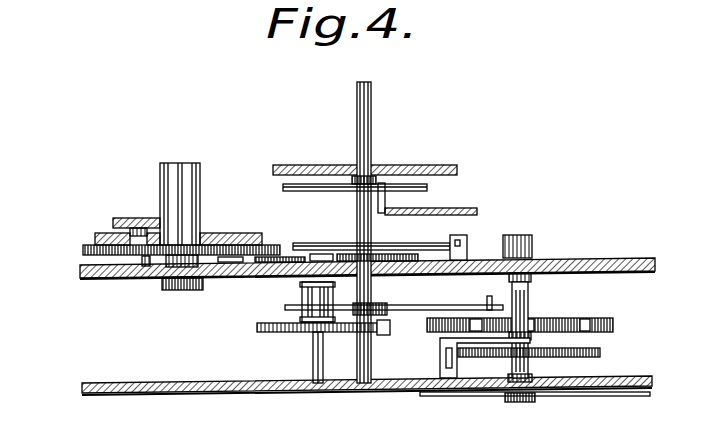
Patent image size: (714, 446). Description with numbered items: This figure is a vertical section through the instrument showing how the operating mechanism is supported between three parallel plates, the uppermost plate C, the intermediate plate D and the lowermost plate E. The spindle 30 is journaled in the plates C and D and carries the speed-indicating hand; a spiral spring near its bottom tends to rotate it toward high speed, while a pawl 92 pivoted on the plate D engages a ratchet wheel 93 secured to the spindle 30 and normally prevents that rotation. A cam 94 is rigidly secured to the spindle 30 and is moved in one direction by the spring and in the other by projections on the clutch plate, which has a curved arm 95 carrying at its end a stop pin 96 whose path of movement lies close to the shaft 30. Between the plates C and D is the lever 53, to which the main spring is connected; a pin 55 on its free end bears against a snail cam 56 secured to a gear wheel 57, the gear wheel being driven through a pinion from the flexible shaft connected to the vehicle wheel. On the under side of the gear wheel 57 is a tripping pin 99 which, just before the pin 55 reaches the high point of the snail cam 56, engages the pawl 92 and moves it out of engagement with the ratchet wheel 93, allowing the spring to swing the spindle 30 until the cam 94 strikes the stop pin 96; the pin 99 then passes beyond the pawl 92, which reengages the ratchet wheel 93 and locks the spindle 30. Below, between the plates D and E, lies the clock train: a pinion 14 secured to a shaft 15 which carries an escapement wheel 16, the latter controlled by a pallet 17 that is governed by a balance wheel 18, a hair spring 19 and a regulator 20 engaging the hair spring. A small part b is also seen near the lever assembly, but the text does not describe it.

The spindle 30 is at (372, 117).
The uppermost plate C is at (457, 165).
The intermediate plate D is at (655, 265).
The lowermost plate E is at (652, 378).
The cam 94 is at (427, 187).
The curved arm 95 is at (478, 209).
The stop pin 96 is at (385, 205).
The lever 53 is at (137, 218).
The pin 55 is at (115, 222).
The collar b is at (98, 217).
The snail cam 56 is at (95, 237).
The gear wheel 57 is at (83, 250).
The tripping pin 99 is at (145, 262).
The pawl 92 is at (289, 243).
The ratchet wheel 93 is at (387, 258).
The pinion 14 is at (300, 293).
The escapement wheel 16 is at (257, 327).
The shaft 15 is at (313, 360).
The pallet 17 is at (385, 334).
The balance wheel 18 is at (613, 326).
The hair spring 19 is at (600, 352).
The regulator 20 is at (447, 378).